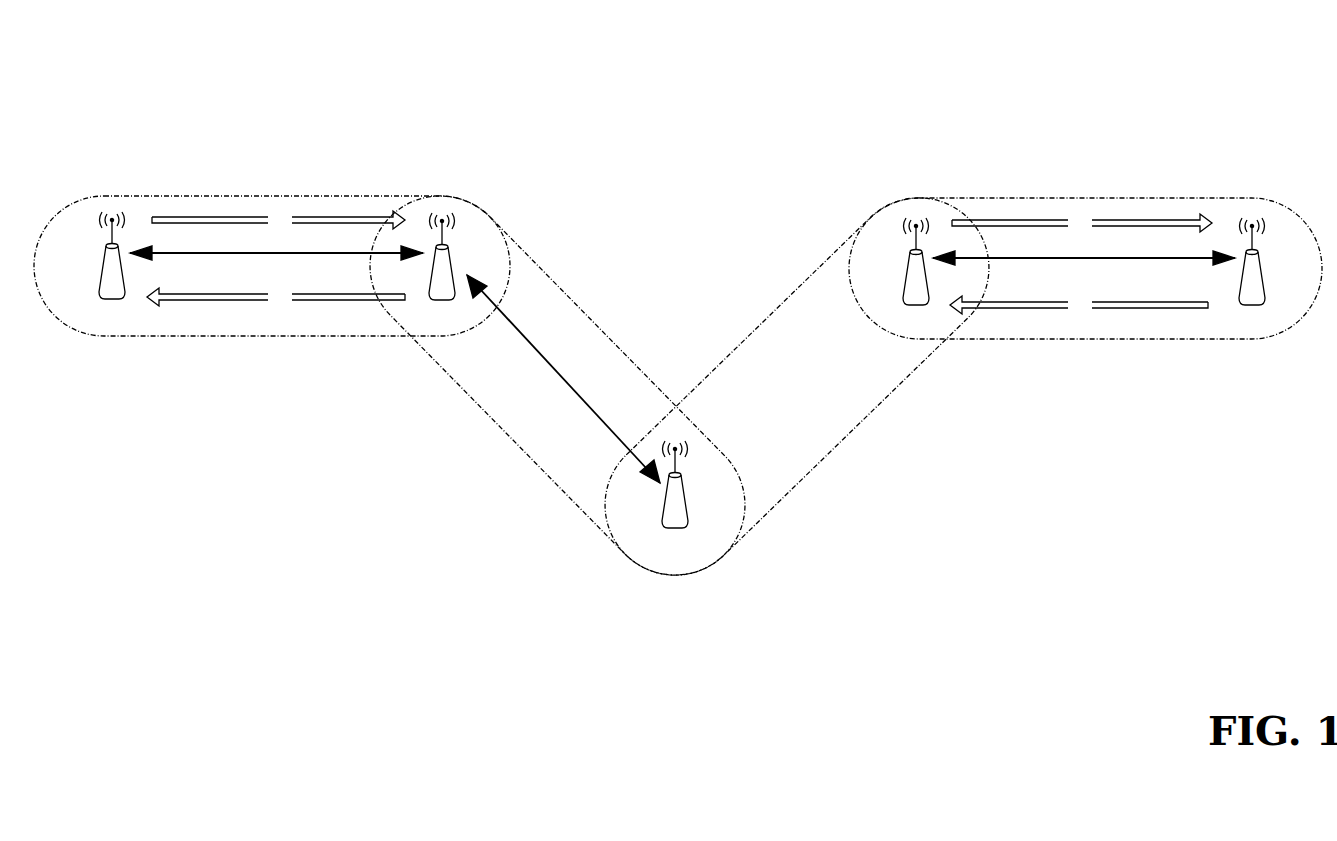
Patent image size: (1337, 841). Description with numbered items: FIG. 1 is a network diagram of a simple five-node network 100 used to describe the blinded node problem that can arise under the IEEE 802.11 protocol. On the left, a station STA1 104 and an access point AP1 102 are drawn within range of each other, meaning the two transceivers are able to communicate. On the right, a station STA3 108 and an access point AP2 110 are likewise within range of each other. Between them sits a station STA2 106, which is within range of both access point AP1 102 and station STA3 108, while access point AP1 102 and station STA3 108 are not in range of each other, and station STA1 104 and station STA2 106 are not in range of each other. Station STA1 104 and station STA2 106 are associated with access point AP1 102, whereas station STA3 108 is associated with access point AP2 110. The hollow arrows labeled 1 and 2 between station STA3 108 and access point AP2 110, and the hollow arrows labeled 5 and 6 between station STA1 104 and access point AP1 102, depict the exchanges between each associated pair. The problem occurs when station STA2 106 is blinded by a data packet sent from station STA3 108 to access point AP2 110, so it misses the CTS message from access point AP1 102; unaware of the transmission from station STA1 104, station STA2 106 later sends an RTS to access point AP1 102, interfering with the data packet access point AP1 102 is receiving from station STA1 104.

The five-node network 100 is at (1105, 40).
The access point AP1 102 is at (456, 272).
The station STA1 104 is at (100, 272).
The station STA2 106 is at (687, 499).
The station STA3 108 is at (904, 277).
The access point AP2 110 is at (1268, 277).
The transmission from STA3 to AP2 1 is at (1082, 223).
The transmission from AP2 to STA3 2 is at (1079, 305).
The transmission from STA1 to AP1 5 is at (278, 220).
The transmission from AP1 to STA1 6 is at (276, 297).